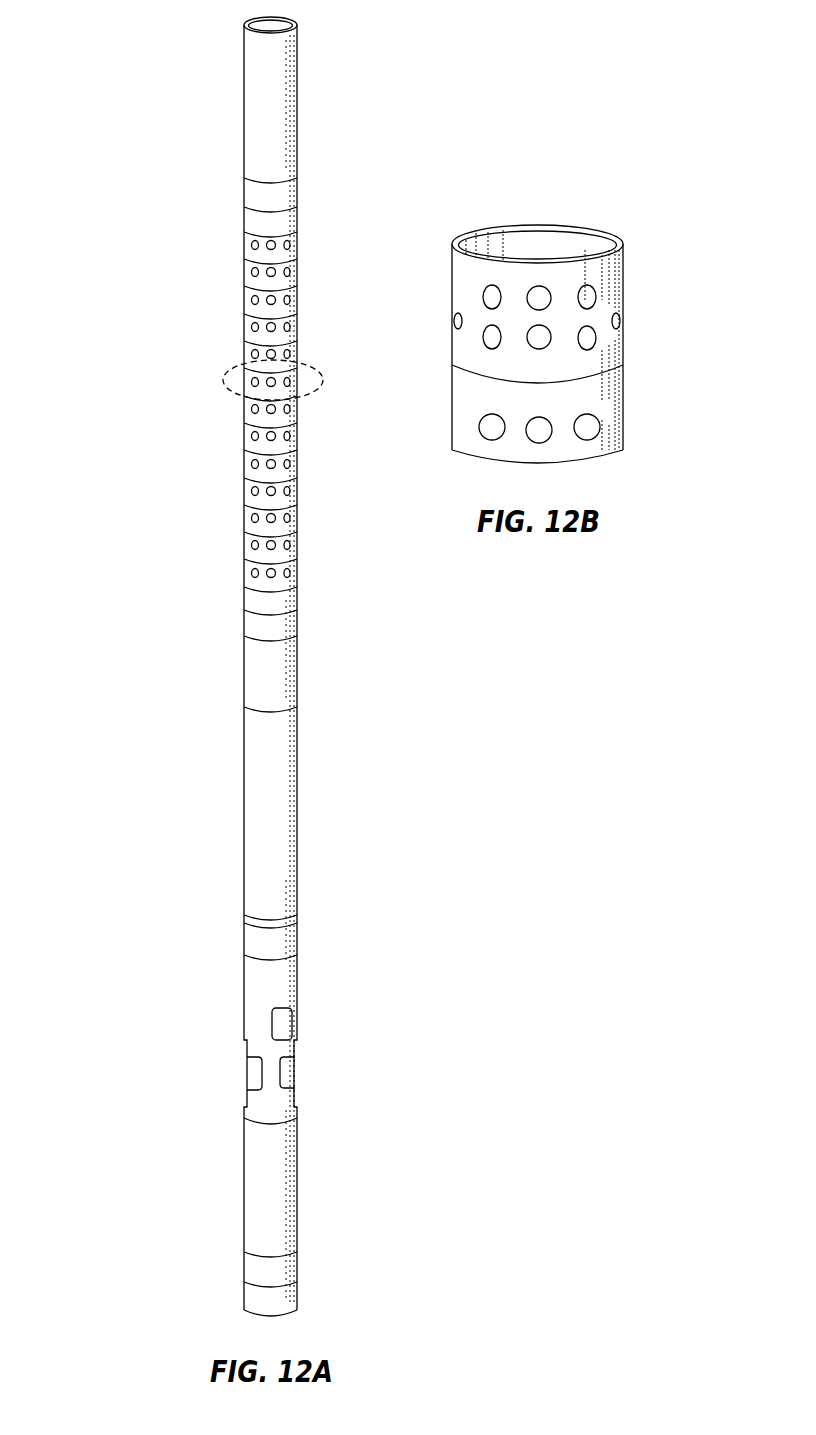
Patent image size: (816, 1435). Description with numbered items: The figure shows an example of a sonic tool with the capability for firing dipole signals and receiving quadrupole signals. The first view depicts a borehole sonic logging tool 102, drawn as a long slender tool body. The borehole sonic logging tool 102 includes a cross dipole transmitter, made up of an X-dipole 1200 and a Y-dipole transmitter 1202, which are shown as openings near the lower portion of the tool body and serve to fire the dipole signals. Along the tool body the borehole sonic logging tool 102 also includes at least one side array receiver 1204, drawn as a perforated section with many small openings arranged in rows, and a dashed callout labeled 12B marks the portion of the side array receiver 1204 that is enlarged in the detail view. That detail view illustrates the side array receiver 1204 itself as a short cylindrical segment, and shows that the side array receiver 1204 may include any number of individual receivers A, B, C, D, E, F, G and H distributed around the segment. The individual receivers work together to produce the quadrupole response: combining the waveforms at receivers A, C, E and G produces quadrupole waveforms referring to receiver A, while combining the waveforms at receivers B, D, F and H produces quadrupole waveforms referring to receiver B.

In FIG. 12A, the borehole sonic logging tool 102 is at (143, 214).
In FIG. 12A, the side array receiver 1204 is at (245, 322).
In FIG. 12A, the detail view callout 12B is at (237, 368).
In FIG. 12A, the X-dipole transmitter 1200 is at (282, 1026).
In FIG. 12A, the Y-dipole transmitter 1202 is at (291, 1074).
In FIG. 12B, the individual receiver A is at (537, 293).
In FIG. 12B, the individual receiver B is at (590, 297).
In FIG. 12B, the individual receiver C is at (618, 322).
In FIG. 12B, the individual receiver D is at (592, 338).
In FIG. 12B, the individual receiver E is at (539, 345).
In FIG. 12B, the individual receiver F is at (490, 338).
In FIG. 12B, the individual receiver G is at (459, 322).
In FIG. 12B, the individual receiver H is at (490, 297).